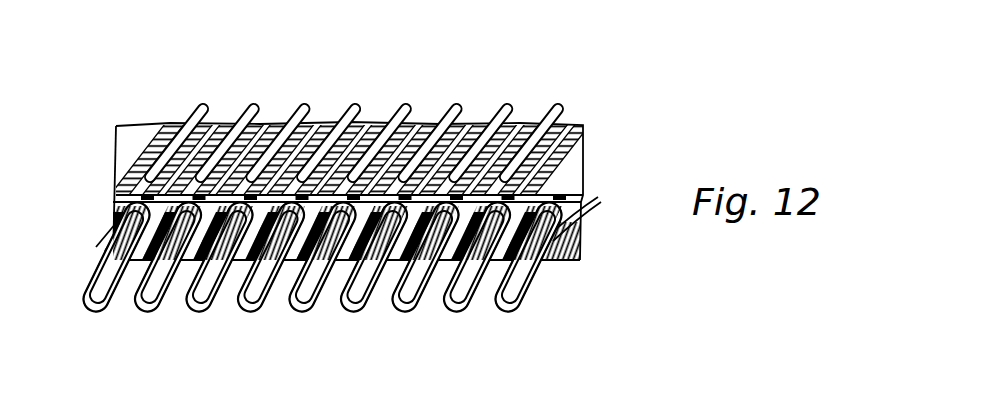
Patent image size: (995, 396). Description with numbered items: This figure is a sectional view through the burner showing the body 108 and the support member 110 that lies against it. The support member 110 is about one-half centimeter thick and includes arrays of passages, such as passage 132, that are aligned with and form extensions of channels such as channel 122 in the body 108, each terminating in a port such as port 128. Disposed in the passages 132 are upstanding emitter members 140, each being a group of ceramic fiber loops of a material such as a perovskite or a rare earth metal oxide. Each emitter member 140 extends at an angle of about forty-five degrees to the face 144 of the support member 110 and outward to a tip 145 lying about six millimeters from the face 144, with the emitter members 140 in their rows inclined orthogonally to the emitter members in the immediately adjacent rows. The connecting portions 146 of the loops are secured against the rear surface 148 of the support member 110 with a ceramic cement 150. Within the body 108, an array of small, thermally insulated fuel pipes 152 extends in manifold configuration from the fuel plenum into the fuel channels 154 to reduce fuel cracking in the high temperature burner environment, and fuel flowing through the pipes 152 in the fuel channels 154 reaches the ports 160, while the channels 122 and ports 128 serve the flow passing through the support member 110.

The body 108 is at (596, 122).
The support member 110 is at (583, 250).
The channel 122 is at (236, 118).
The port 128 is at (225, 268).
The passage 132 is at (378, 290).
The emitter member 140 is at (190, 302).
The face 144 is at (125, 307).
The tip 145 is at (400, 292).
The connecting portion 146 is at (140, 202).
The rear surface 148 is at (560, 174).
The ceramic cement 150 is at (562, 201).
The fuel pipe 152 is at (371, 113).
The fuel channel 154 is at (442, 113).
The port 160 is at (472, 280).